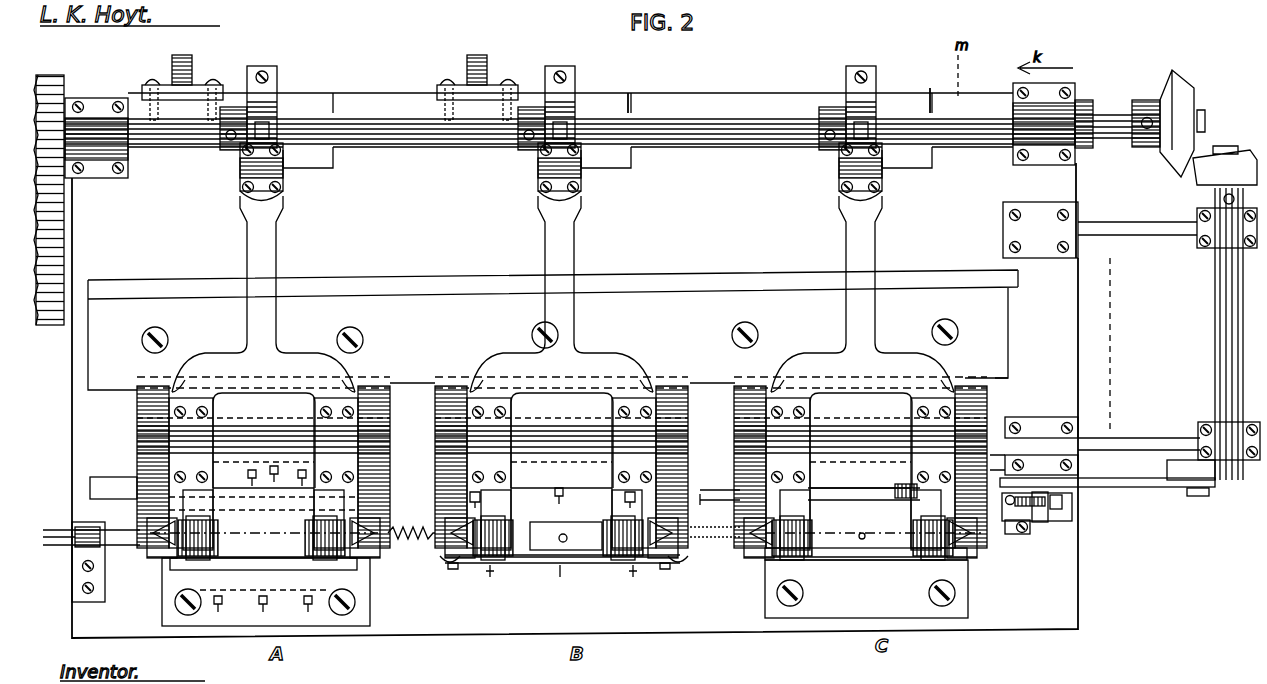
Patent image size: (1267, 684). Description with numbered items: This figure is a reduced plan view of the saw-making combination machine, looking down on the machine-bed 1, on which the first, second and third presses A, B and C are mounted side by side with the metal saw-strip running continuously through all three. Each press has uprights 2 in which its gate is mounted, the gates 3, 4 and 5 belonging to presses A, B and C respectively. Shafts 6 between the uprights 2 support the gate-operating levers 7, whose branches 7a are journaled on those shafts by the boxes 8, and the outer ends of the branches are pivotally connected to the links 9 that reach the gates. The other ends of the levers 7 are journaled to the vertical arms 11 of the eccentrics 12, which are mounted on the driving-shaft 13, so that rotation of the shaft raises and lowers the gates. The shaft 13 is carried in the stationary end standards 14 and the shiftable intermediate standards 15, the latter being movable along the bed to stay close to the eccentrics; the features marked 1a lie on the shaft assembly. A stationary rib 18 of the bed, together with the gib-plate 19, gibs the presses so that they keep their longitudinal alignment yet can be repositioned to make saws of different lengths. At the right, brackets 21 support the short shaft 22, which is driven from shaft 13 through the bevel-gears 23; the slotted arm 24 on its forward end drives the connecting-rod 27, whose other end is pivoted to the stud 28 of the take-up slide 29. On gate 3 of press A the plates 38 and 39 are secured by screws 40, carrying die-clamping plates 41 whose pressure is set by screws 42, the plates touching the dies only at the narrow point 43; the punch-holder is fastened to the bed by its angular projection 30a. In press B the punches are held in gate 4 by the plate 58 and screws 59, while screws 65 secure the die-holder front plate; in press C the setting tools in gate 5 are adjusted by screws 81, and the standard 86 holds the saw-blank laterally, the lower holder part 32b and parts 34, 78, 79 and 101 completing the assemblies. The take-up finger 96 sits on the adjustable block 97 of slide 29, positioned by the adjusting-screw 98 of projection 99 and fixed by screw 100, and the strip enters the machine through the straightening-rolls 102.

The machine-bed 1 is at (575, 365).
The clamp 1a is at (192, 66).
The uprights 2 is at (137, 426).
The gate 3 is at (264, 537).
The gate 4 is at (562, 542).
The gate 5 is at (875, 523).
The shafts 6 is at (278, 436).
The gate-operating levers 7 is at (563, 294).
The branches 7a is at (567, 368).
The boxes 8 is at (297, 418).
The links 9 is at (565, 535).
The vertical arms 11 is at (238, 170).
The eccentrics 12 is at (278, 78).
The driving-shaft 13 is at (752, 124).
The end standards 14 is at (105, 98).
The intermediate standards 15 is at (613, 101).
The stationary rib 18 is at (547, 475).
The gib-plate 19 is at (535, 325).
The brackets 21 is at (1061, 316).
The short shaft 22 is at (1243, 342).
The bevel-gears 23 is at (1210, 145).
The slotted arm 24 is at (1191, 478).
The connecting-rod 27 is at (1145, 487).
The stud 28 is at (864, 481).
The take-up slide 29 is at (712, 496).
The angular projection 30a is at (370, 610).
The plate 32b is at (866, 589).
The cone block 34 is at (177, 513).
The plate 38 is at (272, 574).
The plate 39 is at (263, 511).
The screws 40 is at (263, 599).
The die-clamping plates 41 is at (263, 542).
The screws 42 is at (335, 543).
The narrow point 43 is at (828, 530).
The plate 58 is at (565, 556).
The screws 59 is at (559, 575).
The screws 65 is at (566, 568).
The screw 78 is at (542, 533).
The screw 79 is at (564, 537).
The screws 81 is at (858, 533).
The standard 86 is at (866, 560).
The take-up finger 96 is at (1015, 534).
The adjustable block 97 is at (1040, 523).
The adjusting-screw 98 is at (1062, 501).
The projection 99 is at (1056, 510).
The screw 100 is at (1102, 446).
The box 101 is at (1072, 514).
The straightening-rolls 102 is at (73, 562).